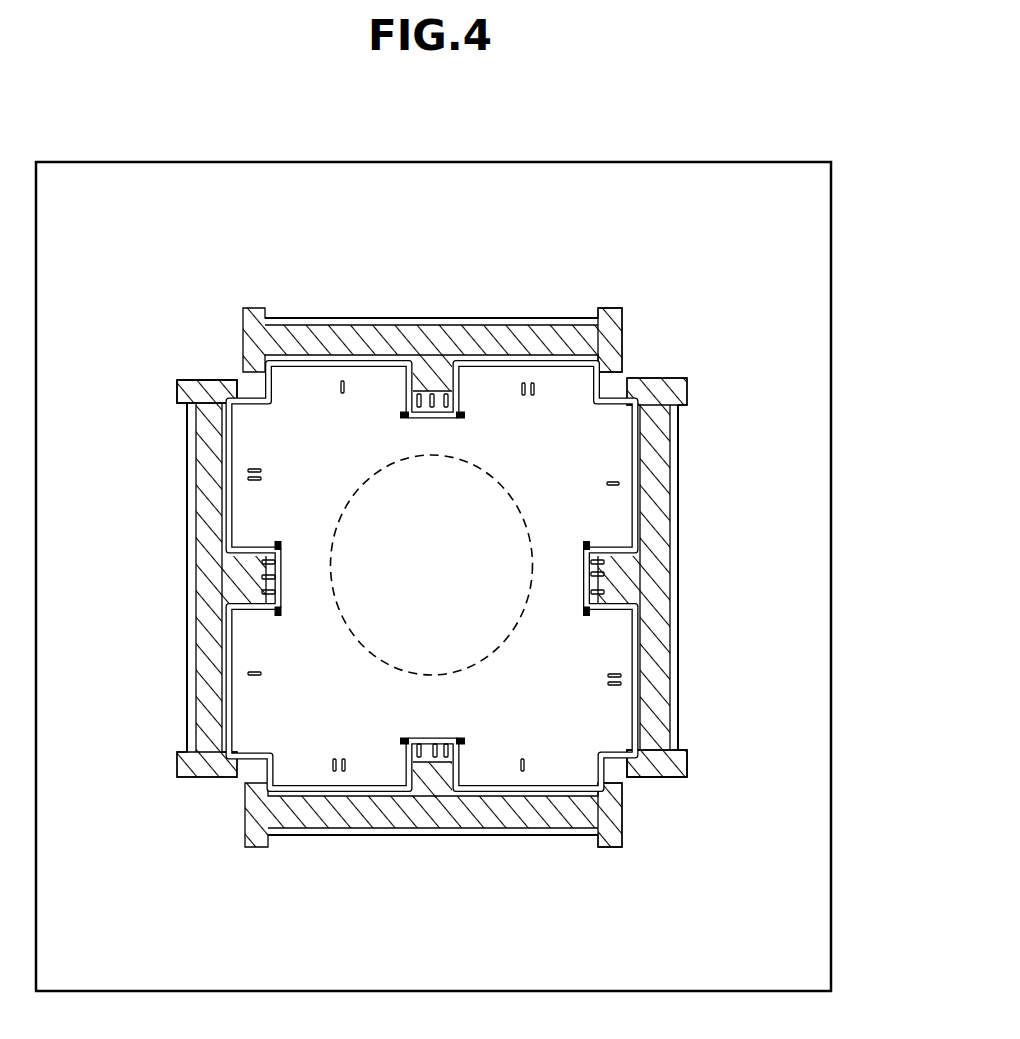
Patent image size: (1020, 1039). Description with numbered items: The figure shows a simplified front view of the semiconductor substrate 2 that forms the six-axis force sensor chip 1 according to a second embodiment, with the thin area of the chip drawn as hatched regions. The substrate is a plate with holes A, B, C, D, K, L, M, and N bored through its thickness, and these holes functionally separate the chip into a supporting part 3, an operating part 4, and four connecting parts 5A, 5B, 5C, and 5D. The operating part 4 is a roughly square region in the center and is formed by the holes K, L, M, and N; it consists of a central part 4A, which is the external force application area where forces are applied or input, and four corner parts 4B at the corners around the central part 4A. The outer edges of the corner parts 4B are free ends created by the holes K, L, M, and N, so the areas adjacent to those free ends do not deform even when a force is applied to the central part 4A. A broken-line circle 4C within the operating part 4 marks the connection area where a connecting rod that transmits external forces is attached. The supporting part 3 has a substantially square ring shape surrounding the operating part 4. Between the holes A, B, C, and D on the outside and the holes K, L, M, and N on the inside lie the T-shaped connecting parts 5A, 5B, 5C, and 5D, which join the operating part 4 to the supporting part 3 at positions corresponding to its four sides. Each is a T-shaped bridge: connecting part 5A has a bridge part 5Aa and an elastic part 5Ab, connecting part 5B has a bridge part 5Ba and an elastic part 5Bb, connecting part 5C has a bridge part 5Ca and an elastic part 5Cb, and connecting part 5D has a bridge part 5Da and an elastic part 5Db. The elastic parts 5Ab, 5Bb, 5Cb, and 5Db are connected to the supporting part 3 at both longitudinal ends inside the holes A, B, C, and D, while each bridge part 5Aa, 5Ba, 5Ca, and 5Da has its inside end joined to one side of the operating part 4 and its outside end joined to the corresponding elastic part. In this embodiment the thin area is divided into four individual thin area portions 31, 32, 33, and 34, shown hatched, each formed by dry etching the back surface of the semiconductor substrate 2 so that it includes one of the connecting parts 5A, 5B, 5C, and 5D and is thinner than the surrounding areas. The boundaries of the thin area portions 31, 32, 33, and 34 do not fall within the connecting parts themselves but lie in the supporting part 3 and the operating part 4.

The six-axis force sensor chip 1 is at (724, 145).
The semiconductor substrate 2 is at (834, 224).
The supporting part 3 is at (775, 352).
The operating part 4 is at (443, 578).
The central part 4A is at (490, 518).
The corner parts 4B is at (236, 386).
The circle 4C is at (507, 640).
The connecting part 5A is at (433, 350).
The bridge part 5Aa is at (400, 384).
The elastic part 5Ab is at (350, 350).
The connecting part 5B is at (660, 580).
The bridge part 5Ba is at (622, 598).
The elastic part 5Bb is at (660, 465).
The connecting part 5C is at (436, 812).
The bridge part 5Ca is at (435, 773).
The elastic part 5Cb is at (355, 833).
The connecting part 5D is at (210, 580).
The bridge part 5Da is at (242, 570).
The elastic part 5Db is at (193, 690).
The thin area portion 31 is at (612, 343).
The thin area portion 32 is at (660, 660).
The thin area portion 33 is at (511, 822).
The thin area portion 34 is at (207, 447).
The hole A is at (560, 327).
The hole B is at (680, 522).
The hole C is at (565, 835).
The hole D is at (192, 522).
The hole K is at (245, 383).
The hole L is at (622, 412).
The hole M is at (620, 740).
The hole N is at (245, 740).